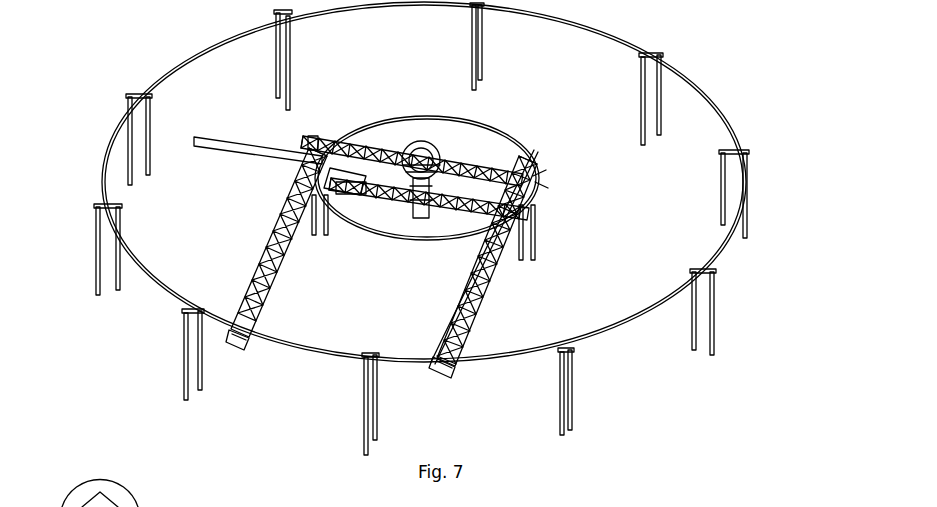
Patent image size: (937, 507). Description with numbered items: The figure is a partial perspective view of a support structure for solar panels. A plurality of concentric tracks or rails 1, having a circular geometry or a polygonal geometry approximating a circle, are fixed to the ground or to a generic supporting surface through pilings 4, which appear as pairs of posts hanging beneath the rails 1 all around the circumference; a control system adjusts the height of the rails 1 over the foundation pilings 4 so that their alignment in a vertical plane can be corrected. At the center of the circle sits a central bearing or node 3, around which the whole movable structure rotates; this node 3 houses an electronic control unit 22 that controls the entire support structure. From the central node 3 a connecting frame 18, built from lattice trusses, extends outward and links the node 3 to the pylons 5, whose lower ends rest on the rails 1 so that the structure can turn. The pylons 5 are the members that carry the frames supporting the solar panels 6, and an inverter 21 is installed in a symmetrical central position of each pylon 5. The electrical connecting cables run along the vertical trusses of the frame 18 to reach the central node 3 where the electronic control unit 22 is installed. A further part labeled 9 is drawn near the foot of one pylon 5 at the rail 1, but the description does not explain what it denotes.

The concentric tracks or rails 1 is at (191, 54).
The pilings 4 is at (299, 101).
The connecting frame 18 is at (490, 162).
The electronic control unit 22 is at (426, 148).
The central bearing or node 3 is at (418, 221).
The inverter 21 is at (349, 194).
The left truss arm 9 is at (254, 332).
The solar panels 6 is at (462, 267).
The pylons 5 is at (239, 348).